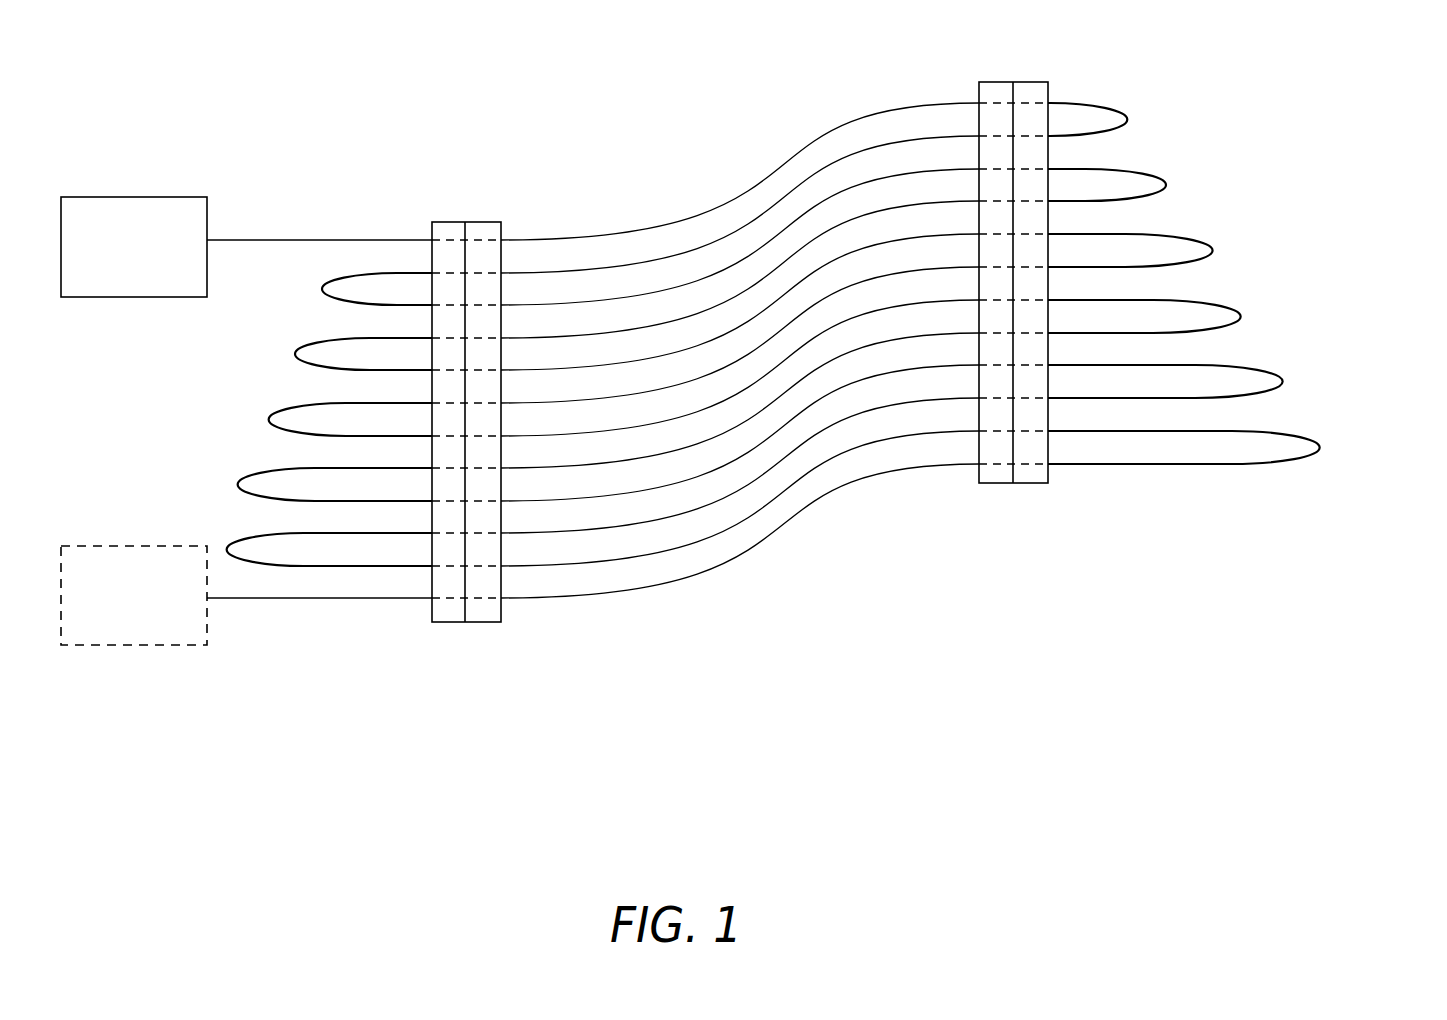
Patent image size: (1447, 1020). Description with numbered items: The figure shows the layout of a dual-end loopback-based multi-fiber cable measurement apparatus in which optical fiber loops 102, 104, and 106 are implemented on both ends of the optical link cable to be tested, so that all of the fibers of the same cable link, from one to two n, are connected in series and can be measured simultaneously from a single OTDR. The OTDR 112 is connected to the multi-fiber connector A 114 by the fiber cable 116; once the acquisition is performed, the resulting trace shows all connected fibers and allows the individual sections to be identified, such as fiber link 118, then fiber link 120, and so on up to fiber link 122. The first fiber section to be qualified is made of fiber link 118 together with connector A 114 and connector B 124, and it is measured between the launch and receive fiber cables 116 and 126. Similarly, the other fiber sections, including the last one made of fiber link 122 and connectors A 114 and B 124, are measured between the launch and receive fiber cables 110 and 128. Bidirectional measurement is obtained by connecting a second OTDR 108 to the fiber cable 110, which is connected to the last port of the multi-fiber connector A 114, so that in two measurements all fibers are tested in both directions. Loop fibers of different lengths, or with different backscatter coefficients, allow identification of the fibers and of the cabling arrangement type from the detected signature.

The optical fiber loop 102 is at (1187, 106).
The optical fiber loop 104 is at (1239, 479).
The optical fiber loop 106 is at (273, 467).
The OTDR 108 is at (175, 542).
The fiber cable 110 is at (270, 601).
The OTDR 112 is at (117, 190).
The multi-fiber connector A 114 is at (466, 217).
The fiber cable 116 is at (272, 232).
The fiber link 118 is at (714, 191).
The fiber link 120 is at (800, 163).
The fiber link 122 is at (805, 502).
The multi-fiber connector B 124 is at (1009, 78).
The fiber cable 126 is at (1128, 126).
The fiber cable 128 is at (1318, 455).